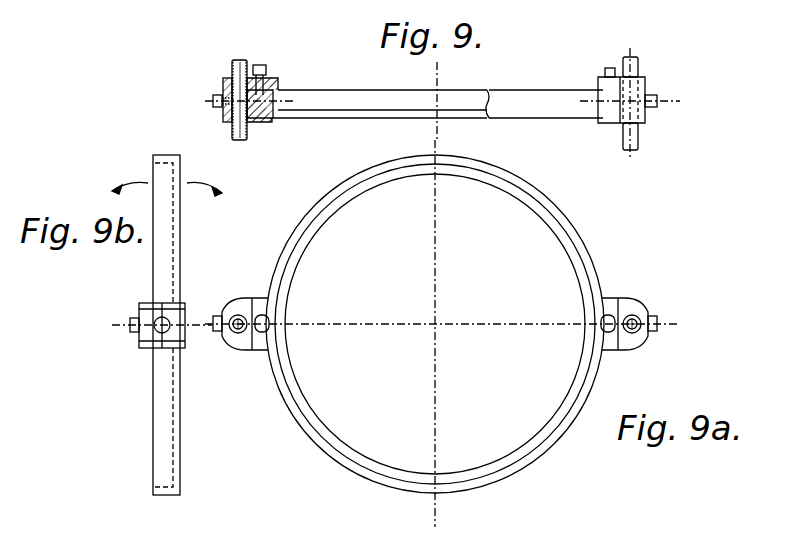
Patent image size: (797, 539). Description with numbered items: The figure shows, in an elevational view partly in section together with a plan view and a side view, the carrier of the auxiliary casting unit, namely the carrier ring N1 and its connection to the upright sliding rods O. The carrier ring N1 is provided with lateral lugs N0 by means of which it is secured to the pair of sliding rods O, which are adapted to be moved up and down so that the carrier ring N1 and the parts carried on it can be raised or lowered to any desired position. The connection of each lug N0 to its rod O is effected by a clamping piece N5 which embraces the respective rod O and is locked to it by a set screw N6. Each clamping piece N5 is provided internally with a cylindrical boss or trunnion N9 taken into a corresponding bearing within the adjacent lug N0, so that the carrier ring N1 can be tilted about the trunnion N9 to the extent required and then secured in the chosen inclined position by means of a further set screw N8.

In FIG. 9, the carrier ring N1 is at (308, 94).
In FIG. 9A, the carrier ring N1 is at (292, 243).
In FIG. 9B, the carrier ring N1 is at (180, 248).
In FIG. 9, the clamping piece N5 is at (228, 78).
In FIG. 9A, the clamping piece N5 is at (247, 300).
In FIG. 9B, the clamping piece N5 is at (158, 310).
In FIG. 9, the set screw N6 is at (218, 95).
In FIG. 9A, the set screw N6 is at (219, 334).
In FIG. 9B, the set screw N6 is at (160, 338).
In FIG. 9, the set screw N8 is at (262, 70).
In FIG. 9A, the set screw N8 is at (268, 322).
In FIG. 9B, the set screw N8 is at (133, 334).
In FIG. 9, the cylindrical boss or trunnion N9 is at (275, 112).
In FIG. 9, the lateral lug N0 is at (258, 124).
In FIG. 9A, the lateral lug N0 is at (257, 352).
In FIG. 9, the sliding rod O is at (241, 60).
In FIG. 9A, the sliding rod O is at (233, 314).